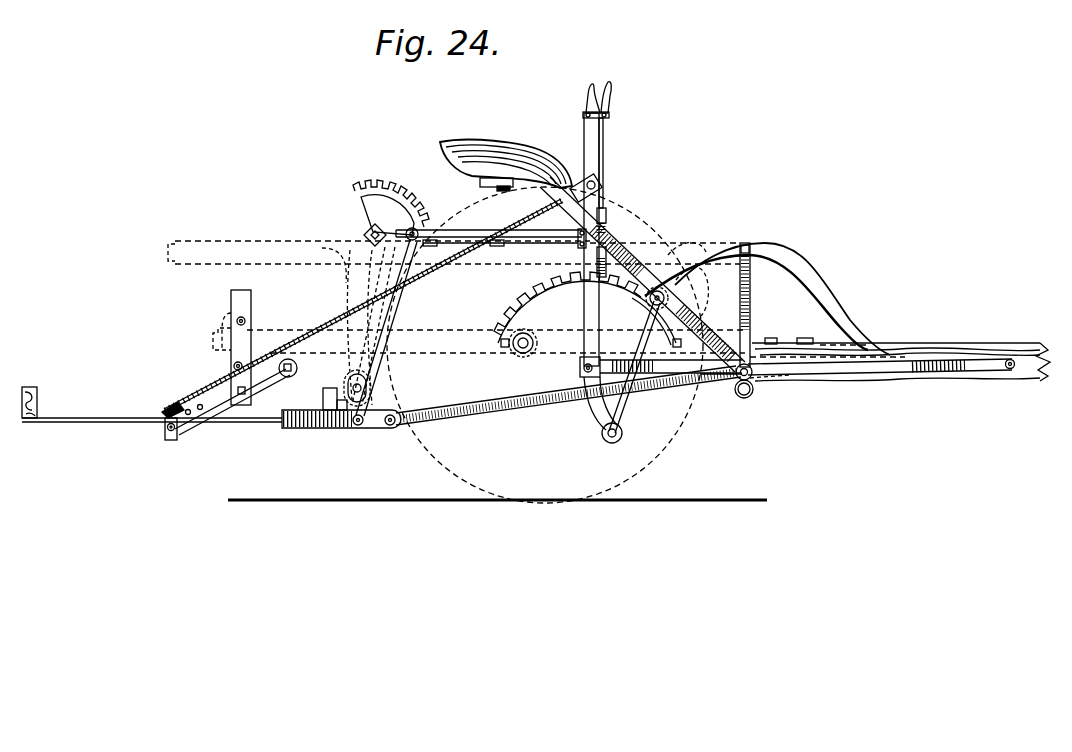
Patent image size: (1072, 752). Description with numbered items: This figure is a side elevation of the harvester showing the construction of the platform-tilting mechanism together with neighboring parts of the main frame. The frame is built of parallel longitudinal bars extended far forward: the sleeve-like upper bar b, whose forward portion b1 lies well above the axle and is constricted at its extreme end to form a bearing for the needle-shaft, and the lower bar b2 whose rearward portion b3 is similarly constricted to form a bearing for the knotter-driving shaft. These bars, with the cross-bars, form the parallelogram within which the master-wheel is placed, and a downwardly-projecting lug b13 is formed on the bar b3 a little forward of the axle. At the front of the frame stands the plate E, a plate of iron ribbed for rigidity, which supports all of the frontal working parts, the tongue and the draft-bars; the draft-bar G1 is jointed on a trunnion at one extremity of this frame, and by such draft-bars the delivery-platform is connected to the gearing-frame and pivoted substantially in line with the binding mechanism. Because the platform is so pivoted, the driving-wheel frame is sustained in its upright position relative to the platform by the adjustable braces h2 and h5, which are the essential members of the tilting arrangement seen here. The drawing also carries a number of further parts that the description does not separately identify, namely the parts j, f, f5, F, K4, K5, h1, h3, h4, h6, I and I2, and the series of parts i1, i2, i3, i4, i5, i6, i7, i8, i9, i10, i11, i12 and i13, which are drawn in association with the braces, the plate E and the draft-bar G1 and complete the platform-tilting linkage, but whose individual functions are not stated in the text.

The hand lever j is at (143, 404).
The pivot block f5 is at (157, 431).
The clamp end of rod K5 is at (184, 400).
The connecting rod K4 is at (342, 322).
The link bar F is at (236, 397).
The upright post f is at (257, 305).
The longitudinal bar b is at (454, 252).
The longitudinal bar b2 is at (271, 335).
The longitudinal bar b3 is at (587, 342).
The toothed segment h6 is at (391, 213).
The pivot h3 is at (419, 230).
The adjustable brace h2 is at (491, 227).
The rod h1 is at (431, 256).
The adjustable brace h5 is at (395, 298).
The rack bar h4 is at (360, 428).
The seat I is at (506, 154).
The forked head i13 is at (611, 111).
The vertical rod i6 is at (597, 159).
The vertical post i5 is at (590, 239).
The rack block i12 is at (590, 252).
The toothed segment i11 is at (587, 309).
The downwardly-projecting lug b13 is at (579, 358).
The pivot i10 is at (650, 302).
The connecting rod i9 is at (640, 349).
The horizontal bar i7 is at (584, 369).
The curved link i4 is at (595, 414).
The pivot i8 is at (602, 439).
The bar i2 is at (708, 376).
The pivot i1 is at (737, 393).
The draft-bar G1 is at (568, 400).
The longitudinal bar b1 is at (692, 248).
The plate E is at (746, 242).
The curved spring arm i3 is at (767, 299).
The beam I2 is at (952, 343).